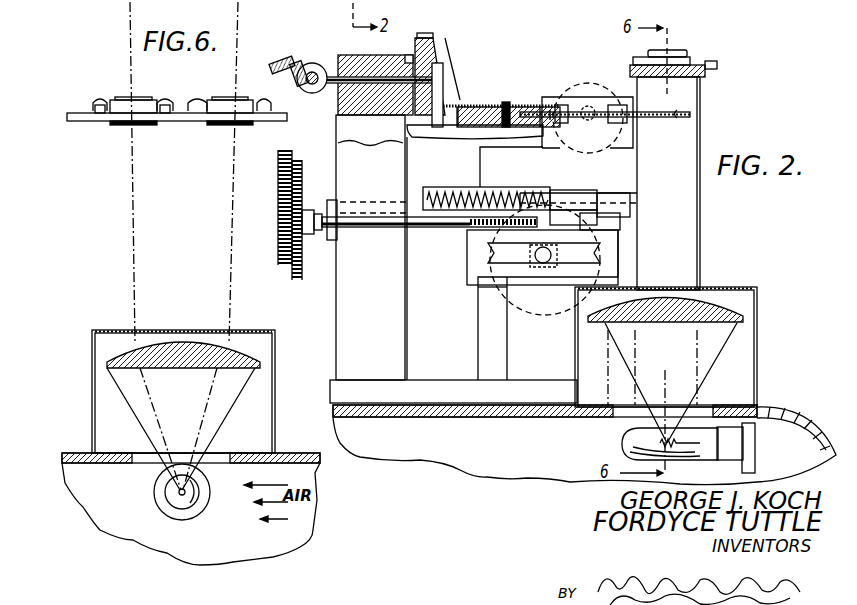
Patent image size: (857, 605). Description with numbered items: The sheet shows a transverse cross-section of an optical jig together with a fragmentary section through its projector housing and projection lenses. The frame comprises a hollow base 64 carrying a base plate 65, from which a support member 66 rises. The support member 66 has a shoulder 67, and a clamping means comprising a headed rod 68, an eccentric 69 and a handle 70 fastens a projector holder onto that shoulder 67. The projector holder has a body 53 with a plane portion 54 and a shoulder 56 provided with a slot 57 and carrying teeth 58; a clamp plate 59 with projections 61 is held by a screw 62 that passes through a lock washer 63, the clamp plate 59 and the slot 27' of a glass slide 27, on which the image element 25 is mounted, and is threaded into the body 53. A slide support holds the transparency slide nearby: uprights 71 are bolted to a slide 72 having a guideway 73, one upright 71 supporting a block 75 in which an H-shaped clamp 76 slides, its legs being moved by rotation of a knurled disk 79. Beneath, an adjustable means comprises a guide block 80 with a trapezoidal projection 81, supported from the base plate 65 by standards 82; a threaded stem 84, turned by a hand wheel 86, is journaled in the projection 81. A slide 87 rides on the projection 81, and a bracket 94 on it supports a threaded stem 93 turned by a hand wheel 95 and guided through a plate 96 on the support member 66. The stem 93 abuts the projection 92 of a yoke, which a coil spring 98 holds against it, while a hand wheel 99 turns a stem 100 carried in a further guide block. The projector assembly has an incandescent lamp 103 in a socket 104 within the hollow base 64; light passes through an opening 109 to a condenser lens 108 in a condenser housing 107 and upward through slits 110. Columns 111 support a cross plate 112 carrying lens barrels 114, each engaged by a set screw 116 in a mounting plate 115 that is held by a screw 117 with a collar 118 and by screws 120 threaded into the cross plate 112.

In FIG. 2, the image element 25 is at (680, 110).
In FIG. 2, the glass slide 27 is at (700, 128).
In FIG. 2, the slot 27' is at (462, 91).
In FIG. 2, the body 53 is at (470, 135).
In FIG. 2, the plane portion 54 is at (543, 107).
In FIG. 2, the shoulder 56 is at (450, 55).
In FIG. 2, the slot 57 is at (450, 74).
In FIG. 2, the teeth 58 is at (433, 36).
In FIG. 2, the clamp plate 59 is at (478, 107).
In FIG. 2, the projections 61 is at (555, 112).
In FIG. 2, the screw 62 is at (506, 102).
In FIG. 2, the lock washer 63 is at (545, 106).
In FIG. 2, the hollow base 64 is at (800, 416).
In FIG. 2, the base plate 65 is at (330, 392).
In FIG. 2, the support member 66 is at (336, 298).
In FIG. 2, the shoulder 67 is at (409, 60).
In FIG. 2, the headed rod 68 is at (362, 72).
In FIG. 2, the eccentric 69 is at (322, 68).
In FIG. 2, the handle 70 is at (288, 60).
In FIG. 2, the uprights 71 is at (490, 162).
In FIG. 2, the slide 72 is at (566, 196).
In FIG. 2, the guideway 73 is at (640, 193).
In FIG. 2, the block 75 is at (588, 83).
In FIG. 2, the H-shaped clamp 76 is at (617, 105).
In FIG. 2, the knurled disk 79 is at (588, 106).
In FIG. 2, the guide block 80 is at (470, 278).
In FIG. 2, the trapezoidal projection 81 is at (495, 253).
In FIG. 2, the standards 82 is at (577, 282).
In FIG. 2, the threaded stem 84 is at (535, 260).
In FIG. 2, the hand wheel 86 is at (540, 318).
In FIG. 2, the slide 87 is at (598, 215).
In FIG. 2, the projection 92 is at (556, 195).
In FIG. 2, the threaded stem 93 is at (450, 228).
In FIG. 2, the bracket 94 is at (618, 200).
In FIG. 2, the hand wheel 95 is at (301, 265).
In FIG. 2, the plate 96 is at (335, 205).
In FIG. 2, the coil spring 98 is at (448, 190).
In FIG. 2, the hand wheel 99 is at (278, 172).
In FIG. 2, the stem 100 is at (335, 200).
In FIG. 6, the incandescent lamp 103 is at (168, 498).
In FIG. 2, the incandescent lamp 103 is at (630, 437).
In FIG. 6, the socket 104 is at (196, 512).
In FIG. 2, the socket 104 is at (725, 430).
In FIG. 6, the condenser housing 107 is at (275, 357).
In FIG. 2, the condenser housing 107 is at (752, 287).
In FIG. 6, the condenser lens 108 is at (205, 372).
In FIG. 2, the condenser lens 108 is at (735, 328).
In FIG. 6, the opening 109 is at (138, 453).
In FIG. 2, the opening 109 is at (623, 407).
In FIG. 6, the slits 110 is at (132, 331).
In FIG. 2, the slits 110 is at (663, 287).
In FIG. 2, the columns 111 is at (685, 225).
In FIG. 6, the cross plate 112 is at (80, 122).
In FIG. 2, the cross plate 112 is at (705, 74).
In FIG. 6, the lens barrels 114 is at (120, 100).
In FIG. 2, the lens barrels 114 is at (648, 53).
In FIG. 6, the mounting plates 115 is at (93, 106).
In FIG. 2, the mounting plates 115 is at (697, 65).
In FIG. 2, the set screw 116 is at (717, 64).
In FIG. 6, the screw 117 is at (176, 99).
In FIG. 6, the collar 118 is at (158, 125).
In FIG. 6, the screws 120 is at (97, 97).